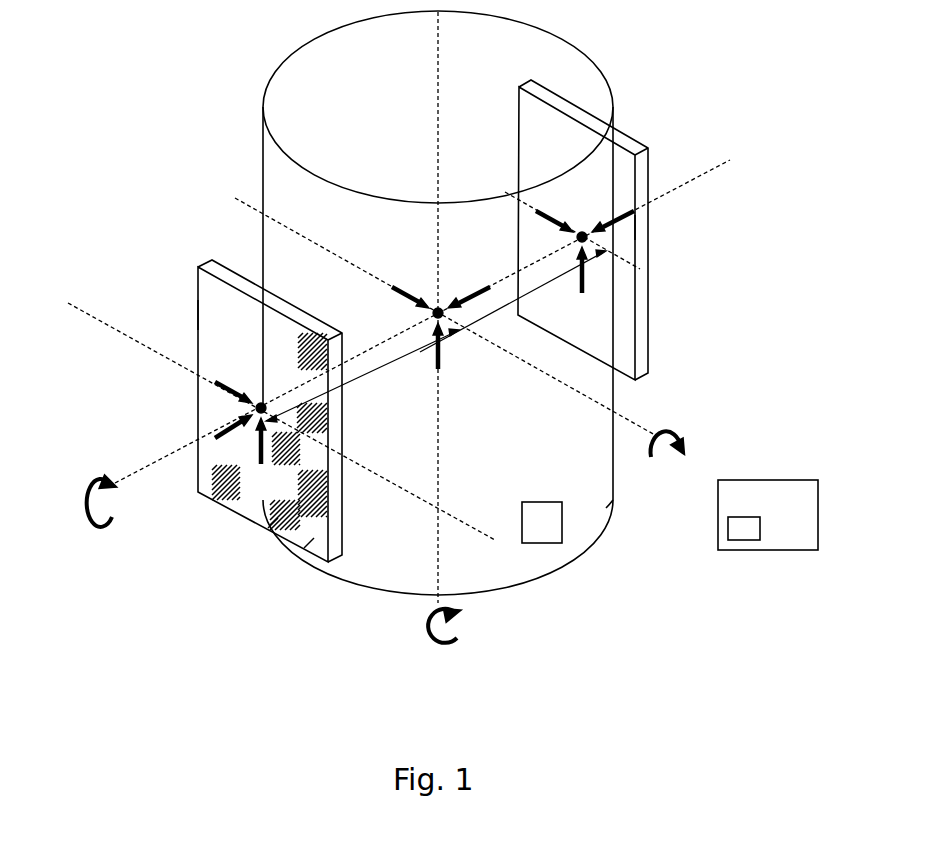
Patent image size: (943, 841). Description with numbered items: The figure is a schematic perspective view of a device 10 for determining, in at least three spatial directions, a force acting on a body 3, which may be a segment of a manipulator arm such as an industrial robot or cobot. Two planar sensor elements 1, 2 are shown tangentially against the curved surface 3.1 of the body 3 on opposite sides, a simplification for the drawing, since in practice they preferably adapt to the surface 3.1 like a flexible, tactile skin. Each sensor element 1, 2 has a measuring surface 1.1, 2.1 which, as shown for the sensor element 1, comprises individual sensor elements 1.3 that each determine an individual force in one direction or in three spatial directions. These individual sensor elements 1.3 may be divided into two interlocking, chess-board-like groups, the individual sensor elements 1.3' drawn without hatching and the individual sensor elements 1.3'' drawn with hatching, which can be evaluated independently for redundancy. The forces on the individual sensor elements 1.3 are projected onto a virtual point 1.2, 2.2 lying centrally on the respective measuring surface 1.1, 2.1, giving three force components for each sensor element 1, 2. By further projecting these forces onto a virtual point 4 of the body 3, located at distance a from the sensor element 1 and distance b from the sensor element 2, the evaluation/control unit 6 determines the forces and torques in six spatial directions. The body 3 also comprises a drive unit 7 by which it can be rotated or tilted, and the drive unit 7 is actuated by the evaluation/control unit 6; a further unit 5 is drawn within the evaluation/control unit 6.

The sensor element 1 is at (203, 263).
The measuring surface 1.1 is at (208, 308).
The virtual point 1.2 is at (258, 402).
The individual sensor element 1.3 is at (271, 468).
The individual sensor elements of first group 1.3' is at (248, 535).
The individual sensor elements of second group 1.3'' is at (281, 554).
The sensor element 2 is at (647, 148).
The measuring surface 2.1 is at (633, 227).
The virtual point 2.2 is at (580, 231).
The body 3 is at (263, 110).
The surface 3.1 is at (607, 505).
The virtual point 4 is at (433, 307).
The processing unit 5 is at (740, 532).
The evaluation/control unit 6 is at (790, 530).
The drive unit 7 is at (547, 538).
The device 10 is at (752, 104).